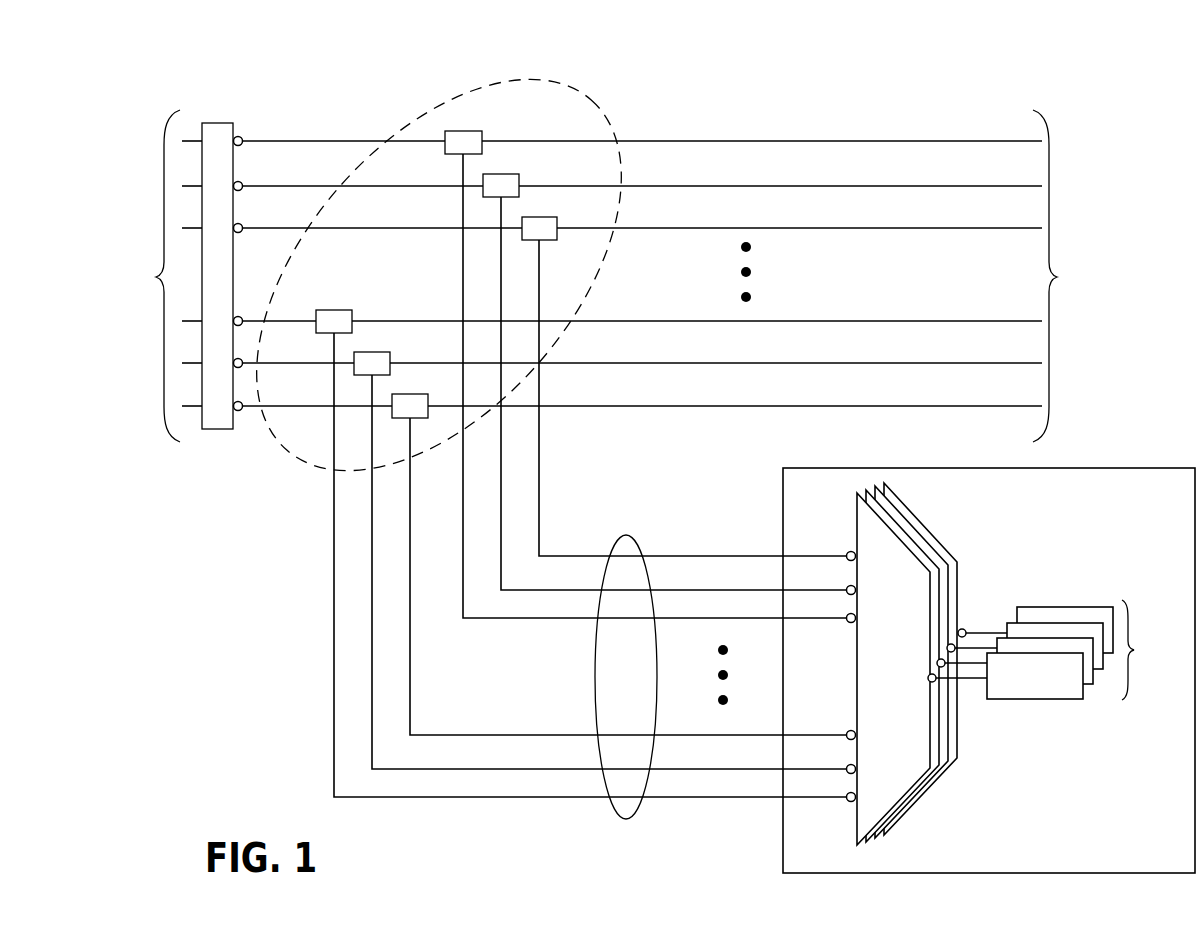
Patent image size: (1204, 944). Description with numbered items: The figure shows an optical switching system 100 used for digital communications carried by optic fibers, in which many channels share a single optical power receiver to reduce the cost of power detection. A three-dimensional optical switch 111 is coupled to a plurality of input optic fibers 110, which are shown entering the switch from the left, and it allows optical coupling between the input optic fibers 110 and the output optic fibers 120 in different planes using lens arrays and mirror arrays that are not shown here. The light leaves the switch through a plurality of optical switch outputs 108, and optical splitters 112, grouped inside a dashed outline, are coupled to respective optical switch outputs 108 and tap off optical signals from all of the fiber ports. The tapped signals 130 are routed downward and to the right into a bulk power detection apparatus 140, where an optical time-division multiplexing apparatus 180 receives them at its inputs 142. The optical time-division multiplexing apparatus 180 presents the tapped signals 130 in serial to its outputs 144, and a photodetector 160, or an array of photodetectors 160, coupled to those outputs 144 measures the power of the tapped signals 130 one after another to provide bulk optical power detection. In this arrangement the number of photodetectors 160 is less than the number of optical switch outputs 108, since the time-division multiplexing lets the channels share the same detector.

The optical switching system 100 is at (830, 117).
The optical switch outputs 108 is at (241, 424).
The input optic fibers 110 is at (152, 277).
The optical switch 111 is at (219, 120).
The optical splitters 112 is at (632, 161).
The output optic fibers 120 is at (673, 276).
The tapped signals 130 is at (592, 707).
The bulk power detection apparatus 140 is at (898, 878).
The input 142 is at (852, 808).
The output 144 is at (966, 622).
The photodetector 160 is at (1054, 650).
The optical time-division multiplexing apparatus 180 is at (933, 795).